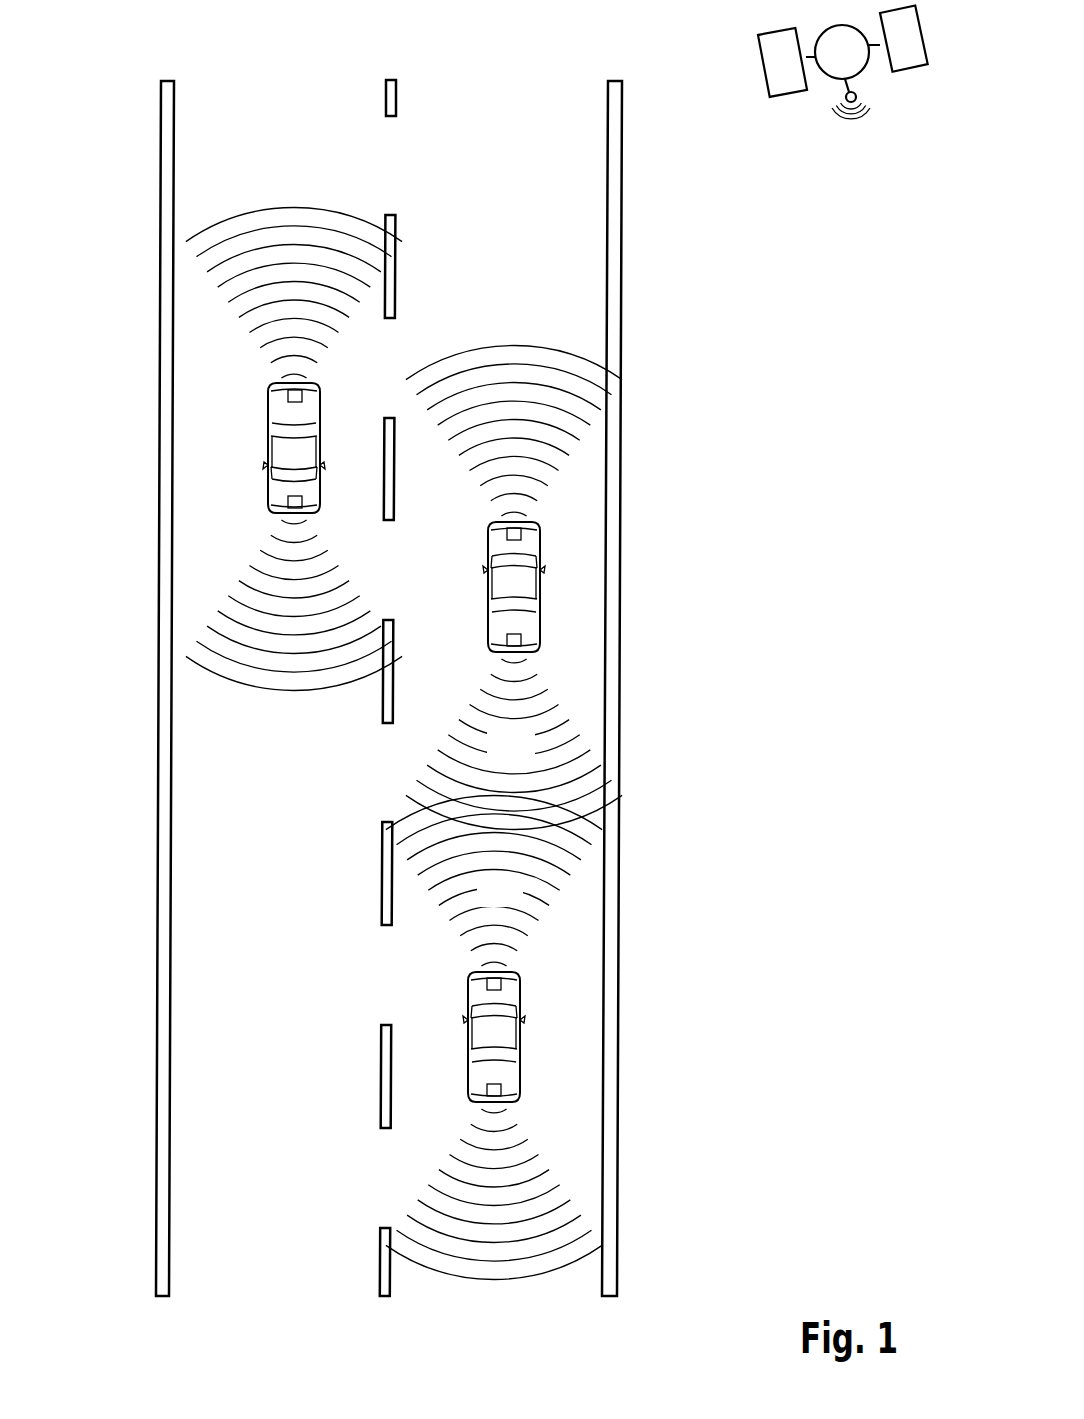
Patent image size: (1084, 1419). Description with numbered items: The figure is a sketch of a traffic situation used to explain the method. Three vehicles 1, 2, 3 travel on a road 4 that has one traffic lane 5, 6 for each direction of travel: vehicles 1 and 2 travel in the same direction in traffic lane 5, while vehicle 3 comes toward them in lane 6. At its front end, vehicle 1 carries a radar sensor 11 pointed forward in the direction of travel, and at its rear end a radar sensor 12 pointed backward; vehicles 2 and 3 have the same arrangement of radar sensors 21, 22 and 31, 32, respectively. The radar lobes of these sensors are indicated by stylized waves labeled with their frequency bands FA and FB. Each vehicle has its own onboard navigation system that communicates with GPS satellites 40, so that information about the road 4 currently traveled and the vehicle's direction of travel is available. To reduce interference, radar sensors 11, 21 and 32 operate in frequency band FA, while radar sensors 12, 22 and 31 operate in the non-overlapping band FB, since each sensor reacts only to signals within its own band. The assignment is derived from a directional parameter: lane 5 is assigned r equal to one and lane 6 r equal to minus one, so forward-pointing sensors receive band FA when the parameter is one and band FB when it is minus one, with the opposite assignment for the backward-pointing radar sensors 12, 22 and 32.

The vehicle 1 is at (550, 566).
The vehicle 2 is at (540, 1068).
The vehicle 3 is at (237, 464).
The road 4 is at (412, 680).
The traffic lane 5 is at (528, 172).
The traffic lane 6 is at (272, 138).
The radar sensor 11 is at (537, 530).
The radar sensor 12 is at (538, 640).
The radar sensor 21 is at (501, 984).
The radar sensor 22 is at (503, 1091).
The radar sensor 31 is at (288, 502).
The radar sensor 32 is at (288, 392).
The GPS satellites 40 is at (857, 164).